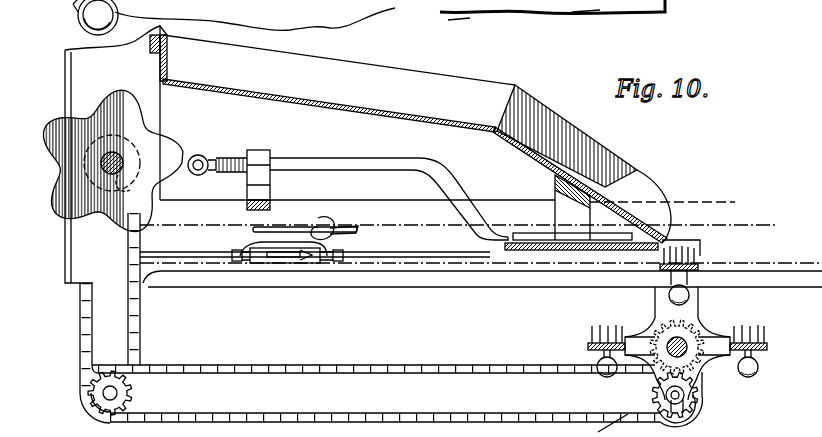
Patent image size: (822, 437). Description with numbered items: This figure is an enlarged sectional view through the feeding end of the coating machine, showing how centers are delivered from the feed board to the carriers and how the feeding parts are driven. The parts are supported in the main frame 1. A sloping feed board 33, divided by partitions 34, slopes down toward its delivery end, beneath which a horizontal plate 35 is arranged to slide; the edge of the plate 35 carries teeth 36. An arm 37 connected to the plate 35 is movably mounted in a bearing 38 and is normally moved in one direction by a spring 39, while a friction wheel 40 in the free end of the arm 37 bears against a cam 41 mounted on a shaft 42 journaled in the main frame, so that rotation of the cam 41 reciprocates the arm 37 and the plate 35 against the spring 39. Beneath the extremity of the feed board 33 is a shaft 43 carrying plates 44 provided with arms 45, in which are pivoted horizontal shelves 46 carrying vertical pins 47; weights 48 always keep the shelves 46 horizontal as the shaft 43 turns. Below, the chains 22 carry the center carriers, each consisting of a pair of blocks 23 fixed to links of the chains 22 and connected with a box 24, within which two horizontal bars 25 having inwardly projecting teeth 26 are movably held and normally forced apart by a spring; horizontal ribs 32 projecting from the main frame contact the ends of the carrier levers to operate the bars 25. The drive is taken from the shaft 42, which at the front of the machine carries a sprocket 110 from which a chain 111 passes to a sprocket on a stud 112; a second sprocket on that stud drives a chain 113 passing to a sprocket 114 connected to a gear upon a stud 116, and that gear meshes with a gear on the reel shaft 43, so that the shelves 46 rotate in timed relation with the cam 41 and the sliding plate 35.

The main frame 1 is at (315, 244).
The chains 22 is at (305, 216).
The blocks 23 is at (262, 263).
The box 24 is at (312, 262).
The horizontal bars 25 is at (304, 257).
The inwardly projecting teeth 26 is at (298, 250).
The horizontal ribs 32 is at (482, 260).
The sloping feed board 33 is at (337, 79).
The partitions 34 is at (582, 164).
The horizontal plate 35 is at (581, 253).
The teeth 36 is at (681, 238).
The arm 37 is at (389, 186).
The bearing 38 is at (272, 200).
The spring 39 is at (243, 161).
The friction wheel 40 is at (198, 149).
The cam 41 is at (144, 171).
The shaft 42 is at (120, 158).
The shaft 43 is at (688, 340).
The plates 44 is at (660, 333).
The arms 45 is at (720, 356).
The horizontal shelves 46 is at (700, 266).
The vertical pins 47 is at (700, 248).
The weights 48 is at (690, 296).
The sprocket 110 is at (98, 180).
The chain 111 is at (141, 332).
The stud 112 is at (103, 393).
The chain 113 is at (337, 356).
The sprocket 114 is at (698, 414).
The stud 116 is at (593, 425).